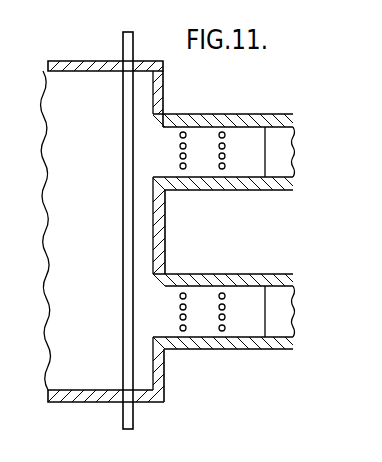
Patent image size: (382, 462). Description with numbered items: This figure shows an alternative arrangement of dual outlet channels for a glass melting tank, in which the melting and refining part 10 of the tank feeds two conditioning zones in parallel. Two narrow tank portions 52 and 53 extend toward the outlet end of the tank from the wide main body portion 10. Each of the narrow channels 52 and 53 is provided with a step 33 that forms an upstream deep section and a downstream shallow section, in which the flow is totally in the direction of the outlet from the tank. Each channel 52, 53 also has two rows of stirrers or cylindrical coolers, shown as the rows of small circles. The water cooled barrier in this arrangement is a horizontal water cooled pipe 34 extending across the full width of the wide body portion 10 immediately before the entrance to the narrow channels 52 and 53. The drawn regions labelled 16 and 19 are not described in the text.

The melting and refining part 10 is at (73, 62).
The interior chamber 16 is at (80, 225).
The fin end 19 is at (294, 148).
The step 33 is at (265, 137).
The water cooled pipe 34 is at (130, 148).
The narrow tank portion 52 is at (221, 121).
The narrow tank portion 53 is at (230, 281).